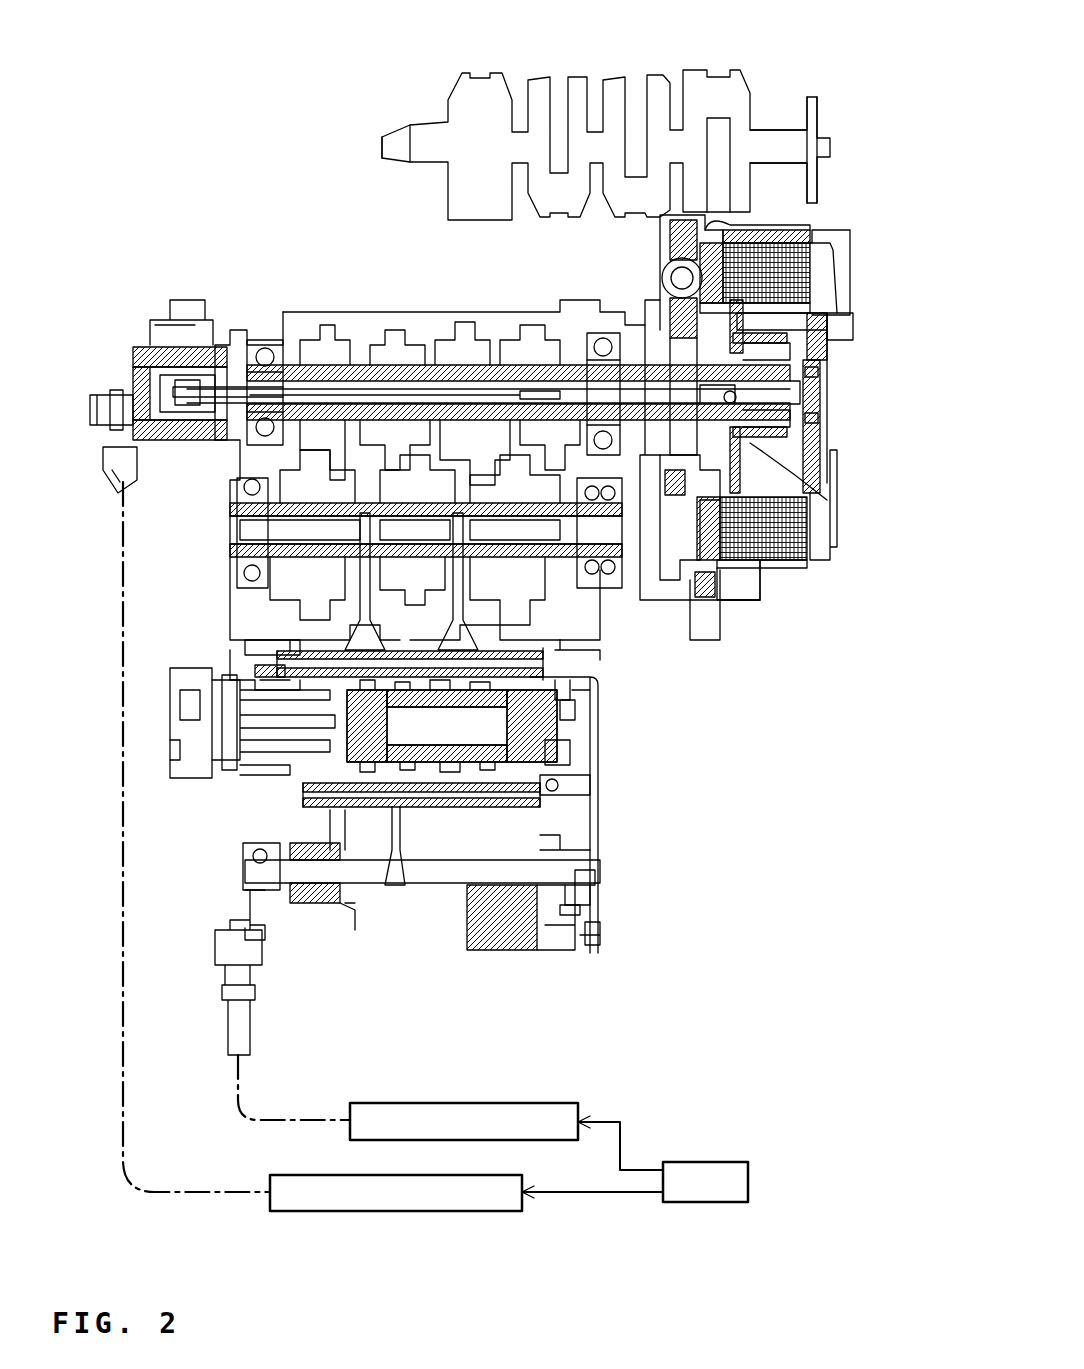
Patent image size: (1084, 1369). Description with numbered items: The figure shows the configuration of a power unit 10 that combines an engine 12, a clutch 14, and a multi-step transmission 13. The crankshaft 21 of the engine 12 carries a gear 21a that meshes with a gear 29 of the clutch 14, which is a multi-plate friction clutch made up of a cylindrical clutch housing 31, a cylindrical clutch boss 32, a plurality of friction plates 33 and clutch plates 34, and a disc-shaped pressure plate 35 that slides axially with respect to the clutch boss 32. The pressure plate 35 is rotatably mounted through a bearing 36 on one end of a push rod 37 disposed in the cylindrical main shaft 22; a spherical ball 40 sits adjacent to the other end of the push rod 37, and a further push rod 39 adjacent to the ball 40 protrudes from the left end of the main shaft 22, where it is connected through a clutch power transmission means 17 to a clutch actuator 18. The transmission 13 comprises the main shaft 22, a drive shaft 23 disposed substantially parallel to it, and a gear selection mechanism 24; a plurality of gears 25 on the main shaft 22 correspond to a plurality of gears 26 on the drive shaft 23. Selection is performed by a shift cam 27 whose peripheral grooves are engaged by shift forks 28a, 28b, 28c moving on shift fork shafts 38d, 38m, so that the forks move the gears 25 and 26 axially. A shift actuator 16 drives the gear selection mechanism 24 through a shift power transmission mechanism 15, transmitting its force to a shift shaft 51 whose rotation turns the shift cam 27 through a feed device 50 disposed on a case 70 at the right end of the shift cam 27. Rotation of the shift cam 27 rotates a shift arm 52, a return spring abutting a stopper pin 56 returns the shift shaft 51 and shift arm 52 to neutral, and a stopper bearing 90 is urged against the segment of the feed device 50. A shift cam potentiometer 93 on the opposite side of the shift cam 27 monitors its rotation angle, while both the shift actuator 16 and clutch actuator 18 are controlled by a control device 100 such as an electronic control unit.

The power unit 10 is at (250, 120).
The engine 12 is at (403, 72).
The transmission 13 is at (780, 978).
The clutch 14 is at (870, 352).
The shift power transmission mechanism 15 is at (280, 1112).
The shift actuator 16 is at (522, 1102).
The clutch power transmission means 17 is at (145, 872).
The clutch actuator 18 is at (468, 1212).
The crankshaft 21 is at (382, 150).
The gear 21a is at (707, 215).
The main shaft 22 is at (552, 362).
The drive shaft 23 is at (630, 545).
The gear selection mechanism 24 is at (575, 645).
The gears 25 is at (512, 335).
The gears 26 is at (580, 618).
The shift cam 27 is at (445, 860).
The shift fork 28a is at (345, 655).
The shift fork 28b is at (400, 870).
The shift fork 28c is at (340, 652).
The gear 29 is at (665, 246).
The clutch housing 31 is at (760, 585).
The clutch boss 32 is at (705, 565).
The friction plates 33 is at (790, 560).
The clutch plates 34 is at (800, 225).
The pressure plate 35 is at (795, 540).
The bearing 36 is at (832, 445).
The push rod 37 is at (820, 387).
The shift fork shaft 38d is at (345, 640).
The shift fork shaft 38m is at (325, 825).
The push rod 39 is at (312, 332).
The ball 40 is at (760, 455).
The feed device 50 is at (730, 775).
The shift shaft 51 is at (600, 870).
The shift arm 52 is at (600, 810).
The stopper pin 56 is at (600, 930).
The case 70 is at (610, 690).
The stopper bearing 90 is at (560, 795).
The shift cam potentiometer 93 is at (170, 765).
The control device 100 is at (720, 1162).